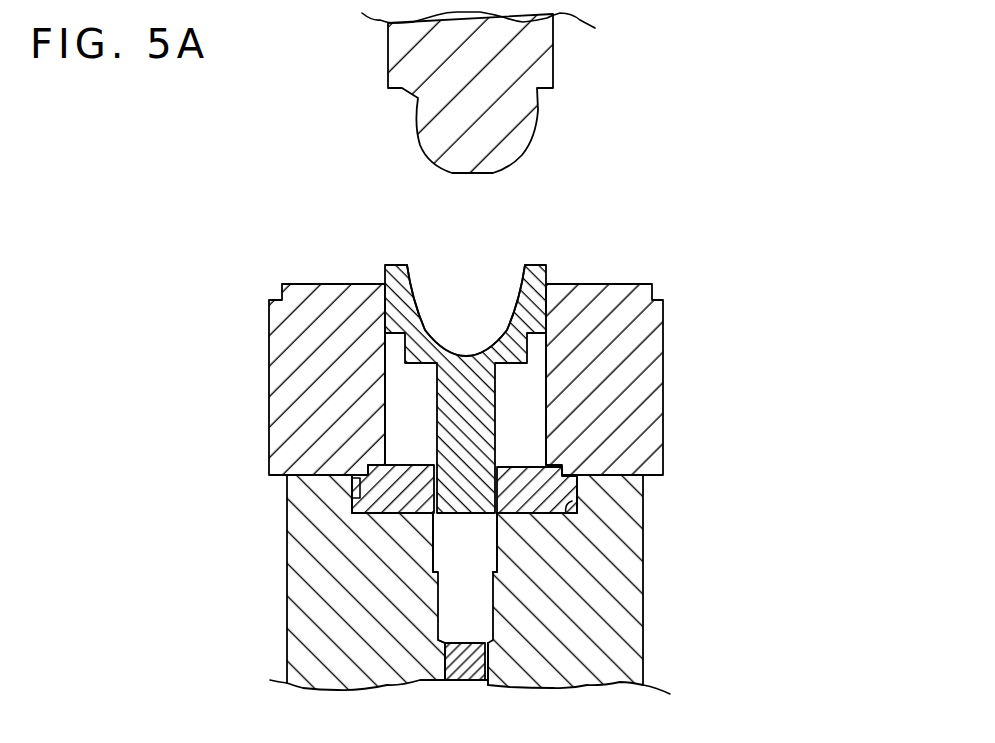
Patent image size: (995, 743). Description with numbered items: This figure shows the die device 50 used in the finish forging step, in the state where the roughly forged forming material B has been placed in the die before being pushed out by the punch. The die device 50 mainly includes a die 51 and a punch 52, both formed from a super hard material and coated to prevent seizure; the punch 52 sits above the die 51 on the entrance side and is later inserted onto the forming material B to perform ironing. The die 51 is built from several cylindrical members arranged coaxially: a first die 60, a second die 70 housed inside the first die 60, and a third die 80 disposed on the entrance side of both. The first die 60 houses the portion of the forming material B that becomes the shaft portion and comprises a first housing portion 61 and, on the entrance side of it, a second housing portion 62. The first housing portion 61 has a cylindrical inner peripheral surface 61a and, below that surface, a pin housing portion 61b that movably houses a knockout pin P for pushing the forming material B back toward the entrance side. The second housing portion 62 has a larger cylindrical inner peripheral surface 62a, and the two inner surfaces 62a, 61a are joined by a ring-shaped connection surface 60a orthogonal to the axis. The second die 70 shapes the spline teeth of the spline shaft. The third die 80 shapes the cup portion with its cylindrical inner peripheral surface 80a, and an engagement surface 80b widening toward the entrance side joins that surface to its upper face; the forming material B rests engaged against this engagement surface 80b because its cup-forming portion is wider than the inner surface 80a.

The die device 50 is at (806, 128).
The die 51 is at (738, 280).
The punch 52 is at (706, 122).
The third die 80 is at (269, 351).
The cylindrical inner peripheral surface 80a is at (540, 392).
The engagement surface 80b is at (548, 288).
The forming material B is at (385, 267).
The second die 70 is at (352, 505).
The second housing portion 62 is at (627, 487).
The cylindrical inner peripheral surface 62a is at (575, 513).
The first die 60 is at (305, 595).
The connection surface 60a is at (402, 513).
The first housing portion 61 is at (622, 614).
The cylindrical inner peripheral surface 61a is at (497, 547).
The pin housing portion 61b is at (492, 666).
The knockout pin P is at (455, 648).